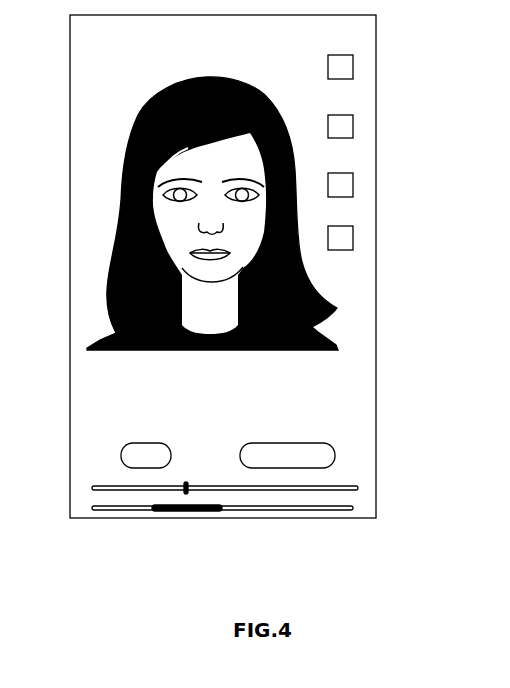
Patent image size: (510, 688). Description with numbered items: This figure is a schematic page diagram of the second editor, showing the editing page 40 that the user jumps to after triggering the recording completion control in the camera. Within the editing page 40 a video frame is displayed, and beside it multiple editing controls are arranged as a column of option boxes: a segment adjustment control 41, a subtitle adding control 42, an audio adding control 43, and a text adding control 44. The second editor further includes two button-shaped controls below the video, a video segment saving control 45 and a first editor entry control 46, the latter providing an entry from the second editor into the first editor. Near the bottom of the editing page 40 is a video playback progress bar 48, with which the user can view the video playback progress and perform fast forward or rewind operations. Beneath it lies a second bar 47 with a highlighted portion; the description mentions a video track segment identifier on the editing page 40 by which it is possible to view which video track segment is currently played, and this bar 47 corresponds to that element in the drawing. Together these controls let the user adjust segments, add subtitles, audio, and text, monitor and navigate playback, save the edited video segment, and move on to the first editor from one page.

The editing page 40 is at (378, 302).
The segment adjustment control 41 is at (353, 70).
The subtitle adding control 42 is at (353, 128).
The audio adding control 43 is at (353, 187).
The text adding control 44 is at (353, 241).
The video segment saving control 45 is at (150, 443).
The first editor entry control 46 is at (272, 443).
The second slider bar 47 is at (262, 510).
The video playback progress bar 48 is at (347, 487).